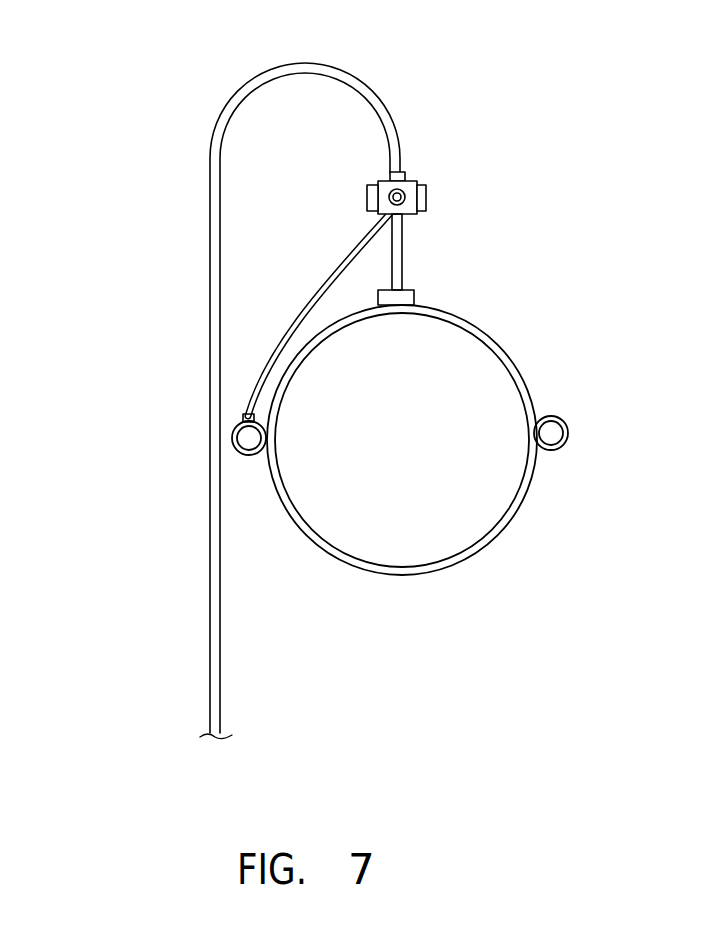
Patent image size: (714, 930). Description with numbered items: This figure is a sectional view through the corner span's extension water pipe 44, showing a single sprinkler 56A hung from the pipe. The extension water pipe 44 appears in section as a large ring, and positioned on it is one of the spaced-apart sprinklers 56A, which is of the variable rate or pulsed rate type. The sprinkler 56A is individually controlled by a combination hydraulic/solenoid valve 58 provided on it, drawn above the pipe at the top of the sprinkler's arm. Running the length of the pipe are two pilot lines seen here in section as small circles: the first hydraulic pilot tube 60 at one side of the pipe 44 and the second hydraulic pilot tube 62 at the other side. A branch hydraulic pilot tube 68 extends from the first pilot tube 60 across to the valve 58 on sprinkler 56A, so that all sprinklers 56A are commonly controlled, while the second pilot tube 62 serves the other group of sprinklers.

The extension water pipe 44 is at (438, 572).
The sprinkler 56A is at (210, 572).
The combination hydraulic/solenoid valve 58 is at (427, 190).
The first hydraulic pilot tube 60 is at (236, 432).
The second hydraulic pilot tube 62 is at (566, 445).
The hydraulic pilot tube 68 is at (343, 270).